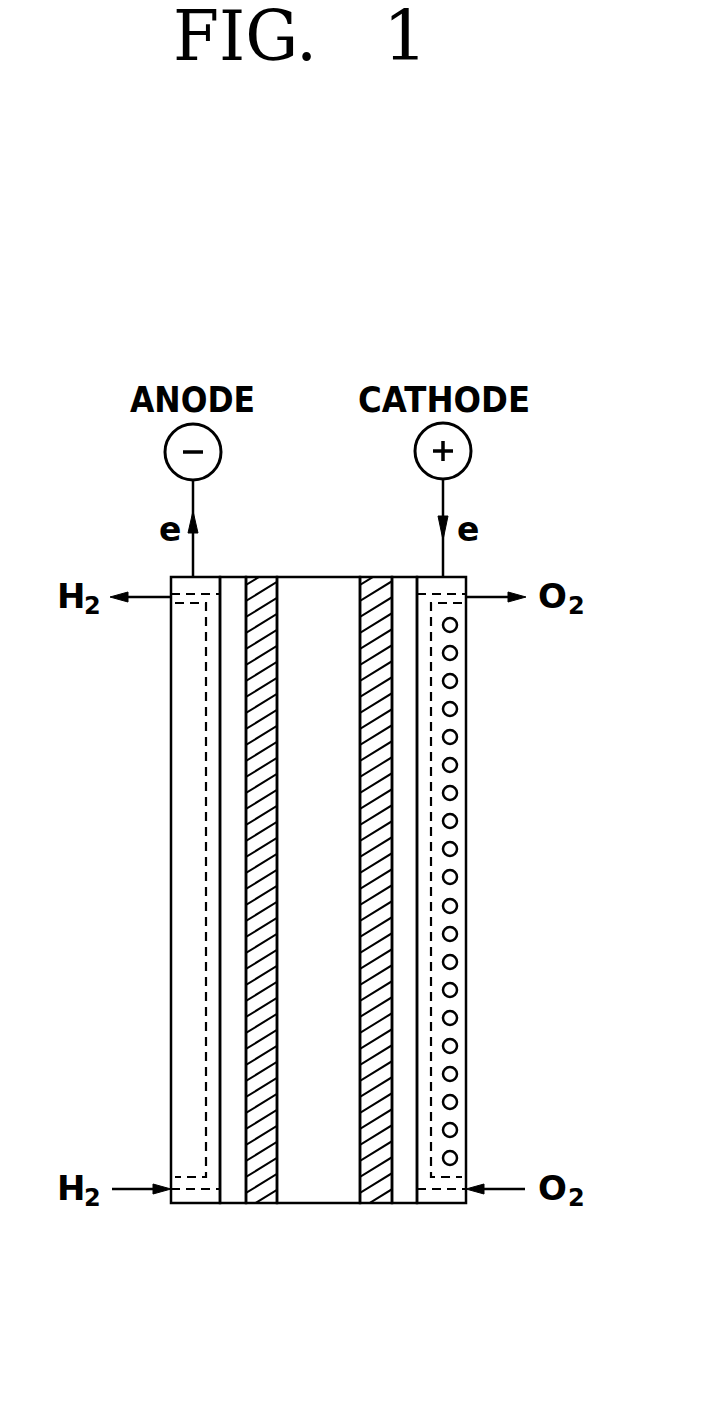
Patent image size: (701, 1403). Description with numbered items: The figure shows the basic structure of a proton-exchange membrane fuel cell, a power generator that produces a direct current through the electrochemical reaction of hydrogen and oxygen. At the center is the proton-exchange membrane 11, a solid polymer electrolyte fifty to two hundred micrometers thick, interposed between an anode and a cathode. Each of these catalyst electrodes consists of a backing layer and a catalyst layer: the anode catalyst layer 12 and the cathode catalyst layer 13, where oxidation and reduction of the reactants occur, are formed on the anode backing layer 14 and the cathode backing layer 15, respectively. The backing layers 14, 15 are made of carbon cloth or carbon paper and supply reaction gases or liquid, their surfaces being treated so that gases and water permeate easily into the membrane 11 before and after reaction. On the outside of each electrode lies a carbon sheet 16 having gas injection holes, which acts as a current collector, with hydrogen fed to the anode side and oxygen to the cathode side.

The proton-exchange membrane 11 is at (318, 1193).
The anode catalyst layer 12 is at (258, 1195).
The cathode catalyst layer 13 is at (368, 1195).
The anode backing layer 14 is at (228, 768).
The cathode backing layer 15 is at (405, 779).
The carbon sheet 16 is at (182, 904).